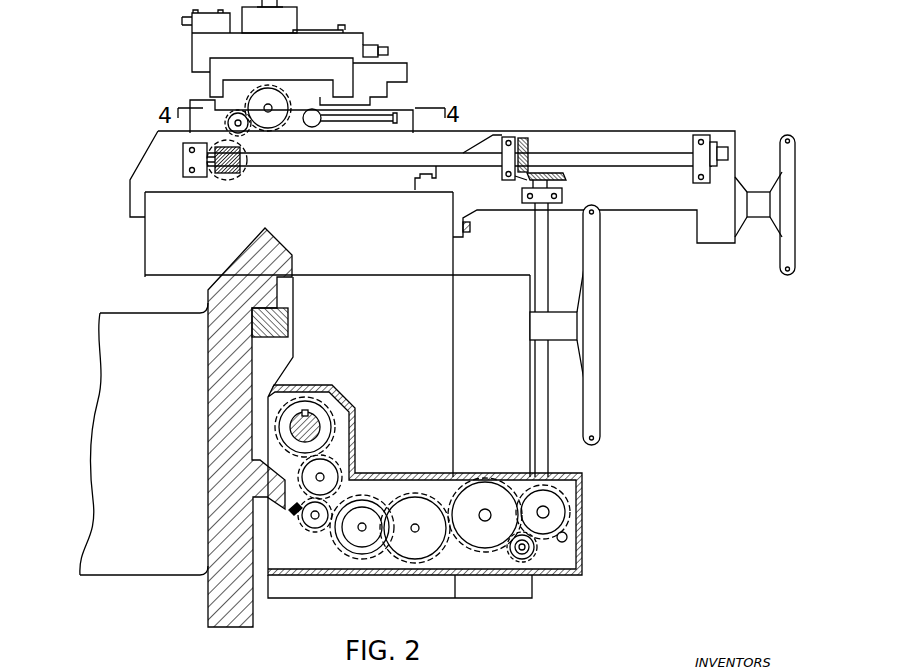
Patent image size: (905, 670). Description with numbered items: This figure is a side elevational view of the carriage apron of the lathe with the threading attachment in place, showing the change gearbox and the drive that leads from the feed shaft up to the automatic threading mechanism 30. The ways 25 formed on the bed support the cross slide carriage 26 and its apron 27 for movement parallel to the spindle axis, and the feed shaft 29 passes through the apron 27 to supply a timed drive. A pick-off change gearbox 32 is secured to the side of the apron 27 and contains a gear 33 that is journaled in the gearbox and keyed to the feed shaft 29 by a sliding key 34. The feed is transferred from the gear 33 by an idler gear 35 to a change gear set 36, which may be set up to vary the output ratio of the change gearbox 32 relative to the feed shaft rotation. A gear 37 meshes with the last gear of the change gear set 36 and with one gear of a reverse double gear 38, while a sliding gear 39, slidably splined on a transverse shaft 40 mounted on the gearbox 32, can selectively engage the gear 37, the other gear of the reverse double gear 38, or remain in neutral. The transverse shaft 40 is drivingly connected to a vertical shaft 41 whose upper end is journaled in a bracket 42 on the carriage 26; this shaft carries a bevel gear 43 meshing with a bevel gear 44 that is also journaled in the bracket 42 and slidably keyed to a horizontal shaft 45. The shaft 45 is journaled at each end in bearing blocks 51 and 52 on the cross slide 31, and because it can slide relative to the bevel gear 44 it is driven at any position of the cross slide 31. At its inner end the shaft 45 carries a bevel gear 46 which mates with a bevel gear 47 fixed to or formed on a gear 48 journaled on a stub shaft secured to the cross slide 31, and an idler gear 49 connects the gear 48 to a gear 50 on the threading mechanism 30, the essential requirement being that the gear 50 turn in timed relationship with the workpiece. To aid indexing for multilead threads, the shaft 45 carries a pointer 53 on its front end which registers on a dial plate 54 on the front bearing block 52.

The ways 25 is at (253, 242).
The cross slide carriage 26 is at (376, 236).
The apron 27 is at (399, 337).
The feed shaft 29 is at (296, 412).
The automatic threading mechanism 30 is at (386, 43).
The cross slide 31 is at (582, 133).
The pick-off change gearbox 32 is at (397, 473).
The gear 33 is at (328, 424).
The sliding key 34 is at (317, 412).
The idler gear 35 is at (327, 472).
The change gear set 36 is at (348, 535).
The gear 37 is at (473, 492).
The reverse double gear 38 is at (530, 558).
The sliding gear 39 is at (555, 497).
The transverse shaft 40 is at (549, 512).
The vertical shaft 41 is at (541, 248).
The bracket 42 is at (488, 198).
The bevel gear 43 is at (563, 176).
The bevel gear 44 is at (527, 135).
The horizontal shaft 45 is at (638, 155).
The bevel gear 46 is at (215, 180).
The bevel gear 47 is at (230, 182).
The gear 48 is at (243, 172).
The idler gear 49 is at (243, 132).
The gear 50 is at (283, 128).
The bearing block 51 is at (183, 158).
The bearing block 52 is at (700, 168).
The pointer 53 is at (721, 148).
The dial plate 54 is at (714, 142).